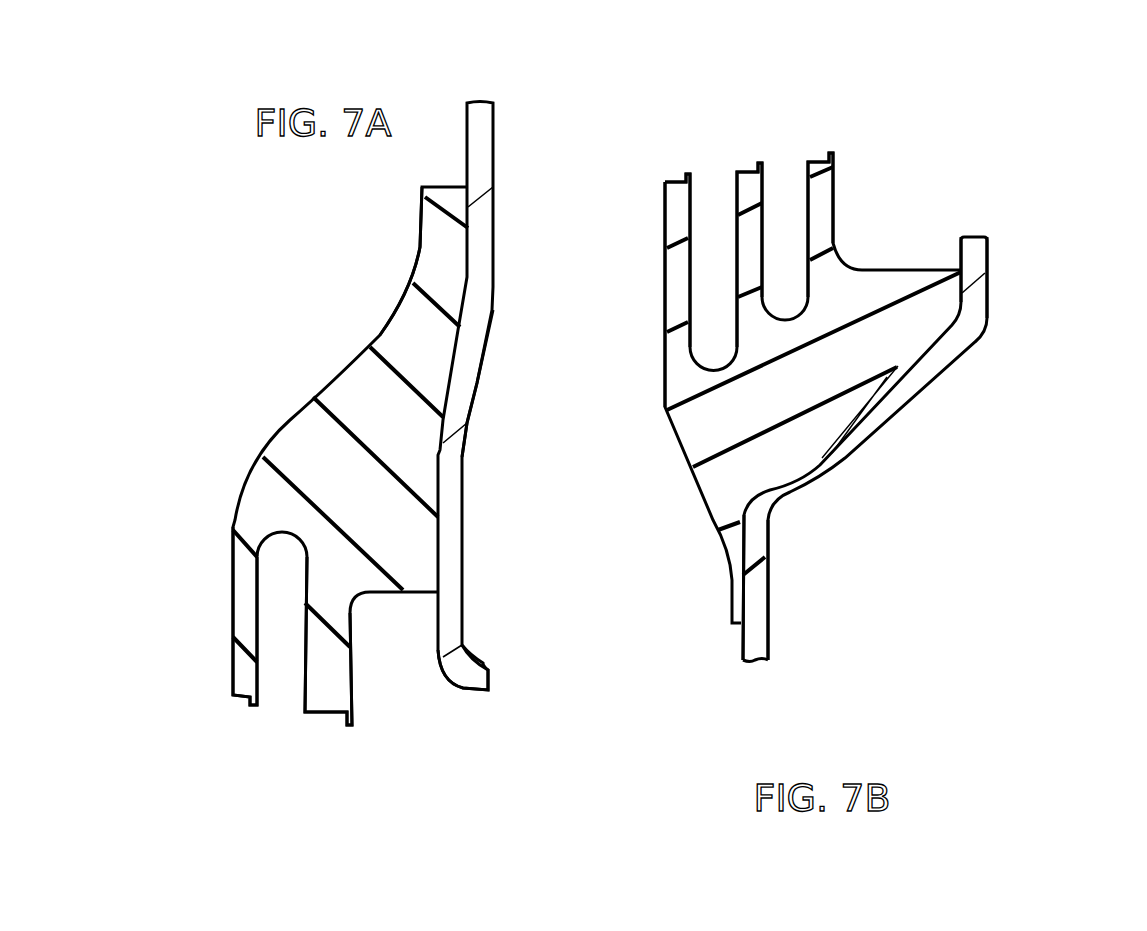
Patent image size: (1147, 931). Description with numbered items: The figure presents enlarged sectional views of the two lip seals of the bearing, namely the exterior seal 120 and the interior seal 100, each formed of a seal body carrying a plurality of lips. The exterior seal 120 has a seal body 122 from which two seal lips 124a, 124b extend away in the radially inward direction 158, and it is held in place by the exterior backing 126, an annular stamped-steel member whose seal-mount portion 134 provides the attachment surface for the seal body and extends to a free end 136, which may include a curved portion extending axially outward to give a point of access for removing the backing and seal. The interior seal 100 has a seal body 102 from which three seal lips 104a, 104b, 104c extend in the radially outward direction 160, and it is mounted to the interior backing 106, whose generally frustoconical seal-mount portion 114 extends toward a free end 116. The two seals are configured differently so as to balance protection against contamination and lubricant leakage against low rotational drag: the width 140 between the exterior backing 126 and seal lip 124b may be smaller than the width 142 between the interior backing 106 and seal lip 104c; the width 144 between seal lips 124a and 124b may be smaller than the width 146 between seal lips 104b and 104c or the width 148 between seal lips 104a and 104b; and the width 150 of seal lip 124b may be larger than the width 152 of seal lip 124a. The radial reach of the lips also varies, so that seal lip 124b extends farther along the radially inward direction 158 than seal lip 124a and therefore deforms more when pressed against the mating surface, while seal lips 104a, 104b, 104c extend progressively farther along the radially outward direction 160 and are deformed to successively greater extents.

In FIG. 7B, the interior seal 100 is at (652, 430).
In FIG. 7B, the body of interior seal 102 is at (850, 355).
In FIG. 7B, the first seal lip of interior seal 104a is at (678, 258).
In FIG. 7B, the second seal lip of interior seal 104b is at (743, 242).
In FIG. 7B, the third seal lip of interior seal 104c is at (827, 210).
In FIG. 7B, the interior backing 106 is at (788, 520).
In FIG. 7B, the seal-mount portion 114 is at (863, 413).
In FIG. 7B, the free end 116 is at (980, 242).
In FIG. 7A, the exterior seal 120 is at (398, 305).
In FIG. 7A, the body of exterior seal 122 is at (355, 385).
In FIG. 7A, the first seal lip of exterior seal 124a is at (252, 618).
In FIG. 7A, the second seal lip of exterior seal 124b is at (337, 673).
In FIG. 7A, the exterior backing 126 is at (484, 513).
In FIG. 7A, the seal-mount portion of exterior backing 134 is at (467, 423).
In FIG. 7A, the free end of exterior backing 136 is at (488, 670).
In FIG. 7A, the width between exterior backing and seal lip 124b 140 is at (438, 673).
In FIG. 7B, the width between interior backing and seal lip 104c 142 is at (833, 67).
In FIG. 7A, the width between seal lips 124a and 124b 144 is at (308, 760).
In FIG. 7B, the width between seal lips 104b and 104c 146 is at (811, 55).
In FIG. 7B, the width between seal lips 104a and 104b 148 is at (741, 128).
In FIG. 7A, the width of seal lip 124b 150 is at (358, 742).
In FIG. 7A, the width of seal lip 124a 152 is at (266, 737).
In FIG. 7A, the radially inward direction 158 is at (130, 455).
In FIG. 7B, the radially outward direction 160 is at (1068, 485).